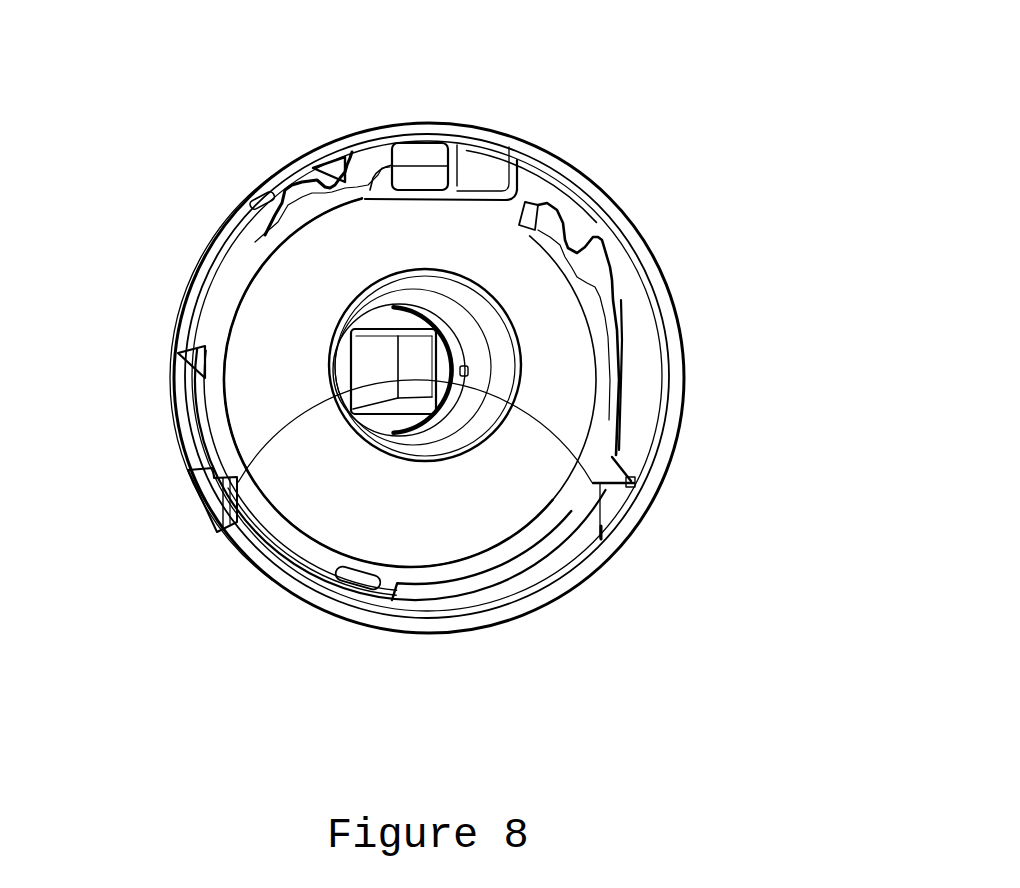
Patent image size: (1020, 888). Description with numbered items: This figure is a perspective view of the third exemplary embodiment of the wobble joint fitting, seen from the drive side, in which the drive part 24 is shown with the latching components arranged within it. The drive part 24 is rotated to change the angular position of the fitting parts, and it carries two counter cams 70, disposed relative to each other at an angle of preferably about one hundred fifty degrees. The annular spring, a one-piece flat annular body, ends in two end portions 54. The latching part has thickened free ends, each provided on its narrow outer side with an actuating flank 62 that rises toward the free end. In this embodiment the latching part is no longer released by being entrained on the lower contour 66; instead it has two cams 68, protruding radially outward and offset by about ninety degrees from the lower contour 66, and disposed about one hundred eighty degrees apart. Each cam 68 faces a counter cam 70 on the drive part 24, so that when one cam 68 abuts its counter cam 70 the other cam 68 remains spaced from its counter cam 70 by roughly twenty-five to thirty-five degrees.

The drive part 24 is at (335, 493).
The end portion 54 is at (531, 214).
The actuating flank 62 is at (614, 292).
The lower contour 66 is at (350, 597).
The cam 68 is at (177, 365).
The counter cam 70 is at (212, 492).